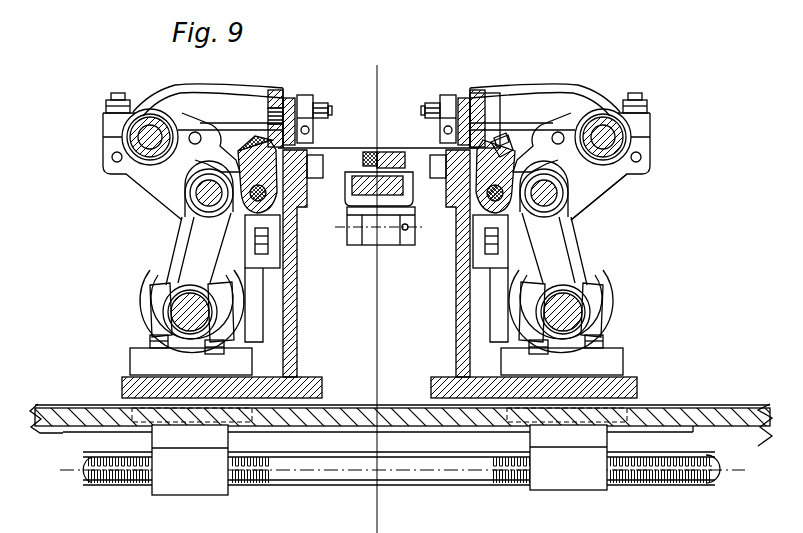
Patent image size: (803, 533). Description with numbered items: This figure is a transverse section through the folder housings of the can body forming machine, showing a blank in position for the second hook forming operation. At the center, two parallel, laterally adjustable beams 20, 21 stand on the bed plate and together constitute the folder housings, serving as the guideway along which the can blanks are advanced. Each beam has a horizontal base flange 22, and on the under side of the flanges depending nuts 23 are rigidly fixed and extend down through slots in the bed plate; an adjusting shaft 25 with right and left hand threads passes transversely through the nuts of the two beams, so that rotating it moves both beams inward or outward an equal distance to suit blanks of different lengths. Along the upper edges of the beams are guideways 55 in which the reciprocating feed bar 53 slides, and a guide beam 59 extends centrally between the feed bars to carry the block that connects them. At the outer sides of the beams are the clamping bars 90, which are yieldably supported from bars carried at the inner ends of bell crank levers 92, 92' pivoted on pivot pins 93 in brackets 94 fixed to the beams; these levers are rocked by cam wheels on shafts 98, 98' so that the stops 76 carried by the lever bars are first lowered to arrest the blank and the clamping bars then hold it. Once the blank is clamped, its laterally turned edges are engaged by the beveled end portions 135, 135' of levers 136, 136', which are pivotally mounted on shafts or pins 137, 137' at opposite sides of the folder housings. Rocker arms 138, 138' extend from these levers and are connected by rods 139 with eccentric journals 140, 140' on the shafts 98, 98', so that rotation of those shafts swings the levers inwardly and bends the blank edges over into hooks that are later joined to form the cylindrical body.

The beam 20 is at (296, 302).
The beam 21 is at (457, 300).
The horizontal base flange 22 is at (123, 384).
The depending nut 23 is at (165, 485).
The adjusting shaft 25 is at (367, 470).
The feed bar 53 is at (312, 156).
The guideway 55 is at (318, 172).
The guide beam 59 is at (355, 197).
The stop 76 is at (318, 150).
The clamping bar 90 is at (486, 136).
The bell crank lever 92 is at (553, 115).
The bell crank lever 92' is at (200, 116).
The pivot pin 93 is at (140, 163).
The bracket 94 is at (630, 176).
The shaft 98 is at (379, 311).
The shaft 98' is at (158, 309).
The beveled end portion 135 is at (514, 162).
The beveled end portion 135' is at (251, 151).
The lever 136 is at (553, 187).
The lever 136' is at (205, 186).
The shaft or pin 137 is at (536, 192).
The shaft or pin 137' is at (215, 191).
The rocker arm 138 is at (578, 195).
The rocker arm 138' is at (182, 194).
The rod 139 is at (205, 243).
The eccentric journal 140 is at (597, 318).
The eccentric journal 140' is at (160, 318).